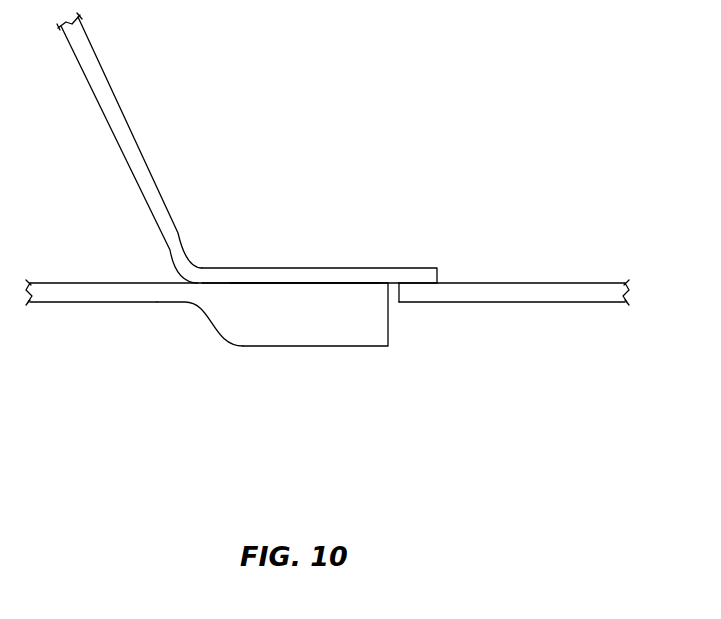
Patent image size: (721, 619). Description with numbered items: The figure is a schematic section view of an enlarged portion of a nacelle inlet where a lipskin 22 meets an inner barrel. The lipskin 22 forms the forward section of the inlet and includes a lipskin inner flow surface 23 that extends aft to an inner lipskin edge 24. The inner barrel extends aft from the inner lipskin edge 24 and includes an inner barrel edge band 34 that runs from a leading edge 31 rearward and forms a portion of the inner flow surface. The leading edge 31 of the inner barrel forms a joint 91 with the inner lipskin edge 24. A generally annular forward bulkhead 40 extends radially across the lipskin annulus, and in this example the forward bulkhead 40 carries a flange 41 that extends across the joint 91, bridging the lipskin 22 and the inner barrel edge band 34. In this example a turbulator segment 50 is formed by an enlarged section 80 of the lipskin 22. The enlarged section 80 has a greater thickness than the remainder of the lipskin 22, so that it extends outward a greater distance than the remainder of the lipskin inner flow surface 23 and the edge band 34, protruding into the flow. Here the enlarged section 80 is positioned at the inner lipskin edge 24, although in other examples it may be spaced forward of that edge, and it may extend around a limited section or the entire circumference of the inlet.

The forward bulkhead 40 is at (107, 105).
The flange 41 is at (375, 275).
The enlarged section 80 is at (290, 297).
The lipskin 22 is at (100, 292).
The lipskin inner flow surface 23 is at (158, 303).
The inner lipskin edge 24 is at (386, 292).
The inner barrel edge band 34 is at (517, 295).
The leading edge 31 is at (400, 291).
The joint 91 is at (397, 306).
The turbulator segment 50 is at (252, 388).